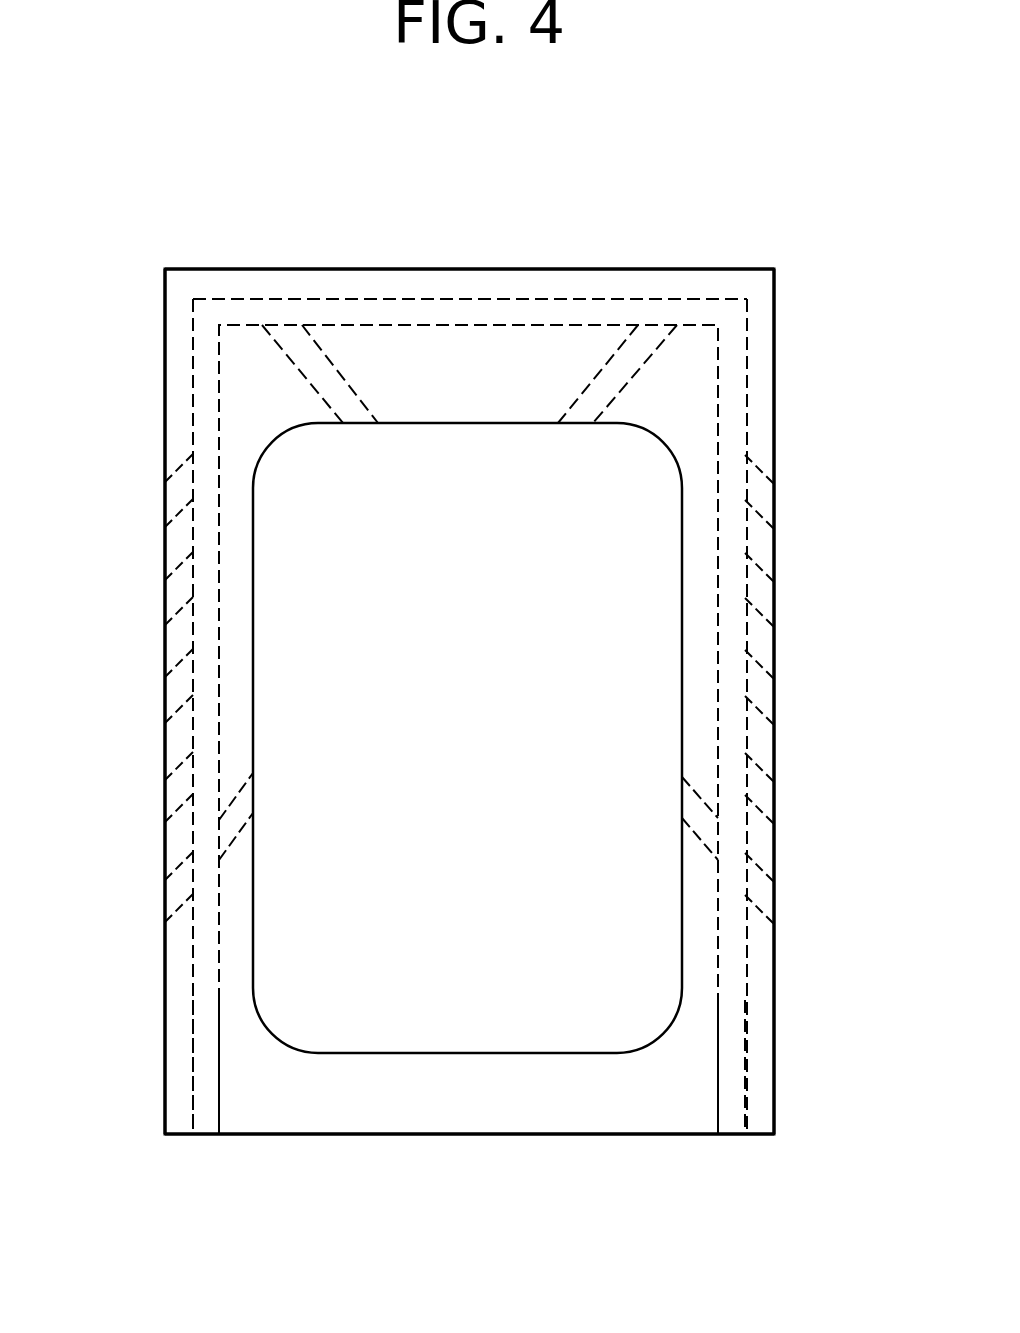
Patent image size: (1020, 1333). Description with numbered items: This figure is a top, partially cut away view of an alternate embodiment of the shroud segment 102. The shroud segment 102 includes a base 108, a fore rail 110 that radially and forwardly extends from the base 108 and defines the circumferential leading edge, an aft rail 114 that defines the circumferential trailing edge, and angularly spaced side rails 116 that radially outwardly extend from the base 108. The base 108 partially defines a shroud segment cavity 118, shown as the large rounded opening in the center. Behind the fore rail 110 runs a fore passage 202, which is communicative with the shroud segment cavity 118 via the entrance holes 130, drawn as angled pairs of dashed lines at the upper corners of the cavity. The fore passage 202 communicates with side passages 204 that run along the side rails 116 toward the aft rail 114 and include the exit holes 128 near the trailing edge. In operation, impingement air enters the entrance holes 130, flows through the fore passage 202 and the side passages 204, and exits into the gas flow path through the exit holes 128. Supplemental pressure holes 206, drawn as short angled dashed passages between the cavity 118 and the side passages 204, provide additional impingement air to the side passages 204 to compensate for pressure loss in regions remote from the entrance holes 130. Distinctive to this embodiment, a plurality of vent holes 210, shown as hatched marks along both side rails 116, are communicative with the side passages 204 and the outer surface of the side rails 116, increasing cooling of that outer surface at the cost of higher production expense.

The shroud segment 102 is at (727, 188).
The base 108 is at (498, 390).
The fore rail 110 is at (407, 269).
The aft rail 114 is at (623, 1136).
The side rails 116 is at (165, 655).
The shroud segment cavity 118 is at (500, 753).
The exit holes 128 is at (203, 1120).
The entrance holes 130 is at (360, 423).
The fore passage 202 is at (485, 308).
The side passages 204 is at (200, 415).
The supplemental pressure holes 206 is at (253, 803).
The vent holes 210 is at (165, 605).